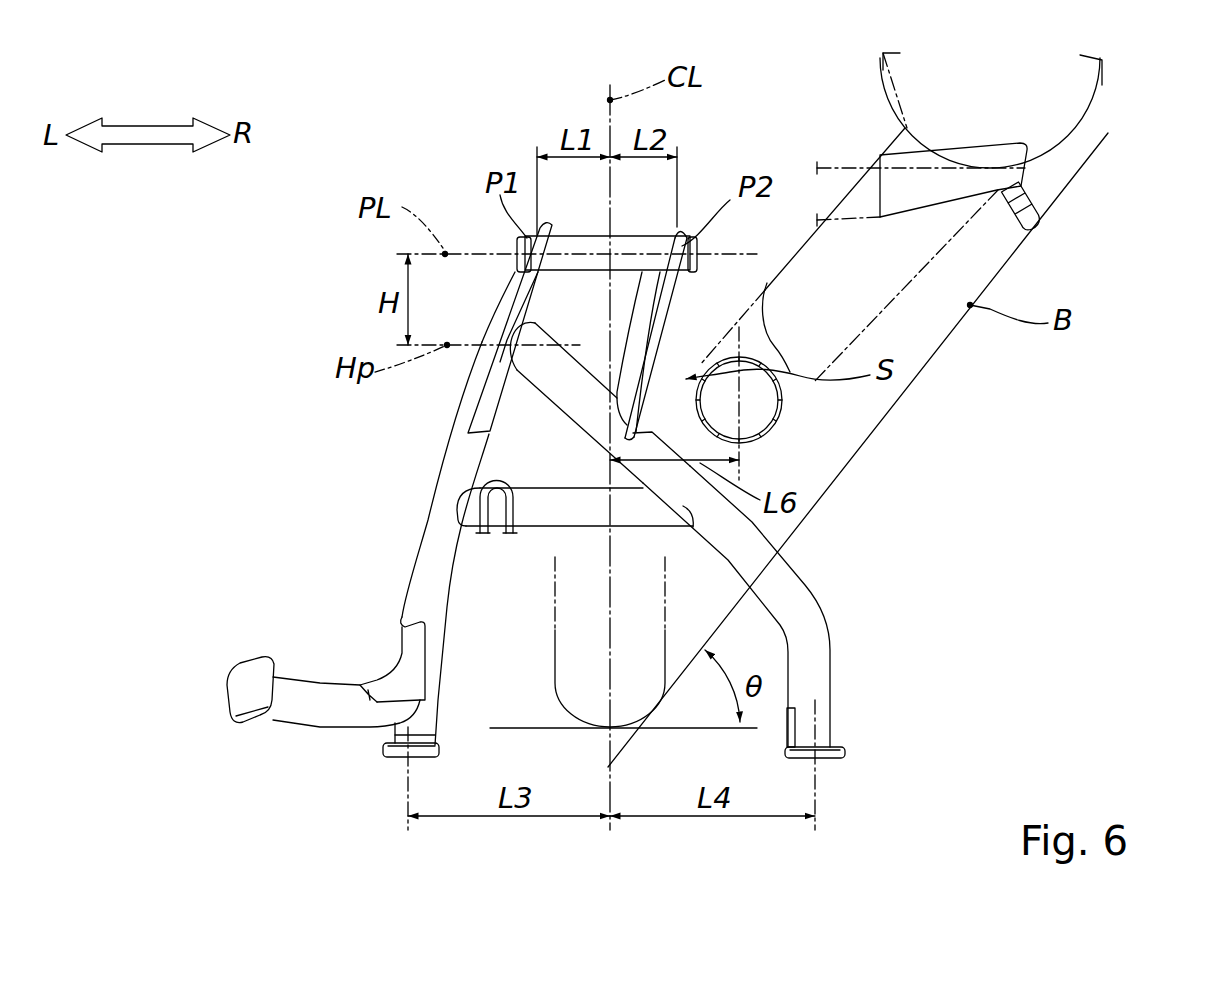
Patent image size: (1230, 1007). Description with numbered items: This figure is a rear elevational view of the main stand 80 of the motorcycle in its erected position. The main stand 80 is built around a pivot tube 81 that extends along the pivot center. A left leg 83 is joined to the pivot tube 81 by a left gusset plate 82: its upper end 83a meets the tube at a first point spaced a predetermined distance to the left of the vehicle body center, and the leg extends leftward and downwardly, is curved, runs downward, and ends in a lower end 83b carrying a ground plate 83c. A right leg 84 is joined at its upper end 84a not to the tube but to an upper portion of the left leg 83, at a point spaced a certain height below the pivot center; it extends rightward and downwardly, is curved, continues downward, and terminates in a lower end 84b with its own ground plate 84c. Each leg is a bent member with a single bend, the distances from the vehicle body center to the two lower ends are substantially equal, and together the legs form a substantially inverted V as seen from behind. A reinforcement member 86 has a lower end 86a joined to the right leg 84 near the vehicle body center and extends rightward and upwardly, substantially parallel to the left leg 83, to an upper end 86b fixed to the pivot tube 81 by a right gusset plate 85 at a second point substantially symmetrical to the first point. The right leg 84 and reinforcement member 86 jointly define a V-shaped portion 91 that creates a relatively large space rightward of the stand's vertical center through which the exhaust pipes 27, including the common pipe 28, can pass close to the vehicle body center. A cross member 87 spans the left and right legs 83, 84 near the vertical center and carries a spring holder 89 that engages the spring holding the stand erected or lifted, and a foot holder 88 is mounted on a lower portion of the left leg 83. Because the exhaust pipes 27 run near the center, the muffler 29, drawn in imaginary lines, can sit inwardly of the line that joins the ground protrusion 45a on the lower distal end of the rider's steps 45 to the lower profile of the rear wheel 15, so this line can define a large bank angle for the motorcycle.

The main stand 80 is at (342, 300).
The pivot tube 81 is at (577, 237).
The left gusset plate 82 is at (476, 408).
The left leg 83 is at (406, 475).
The upper end of left leg 83a is at (513, 280).
The lower end of left leg 83b is at (389, 734).
The ground plate 83c is at (402, 758).
The right leg 84 is at (746, 529).
The upper end of right leg 84a is at (536, 372).
The lower end of right leg 84b is at (830, 727).
The ground plate 84c is at (847, 757).
The right gusset plate 85 is at (655, 305).
The reinforcement member 86 is at (690, 361).
The lower end of reinforcement member 86a is at (620, 415).
The upper end of reinforcement member 86b is at (680, 282).
The cross member 87 is at (537, 527).
The foot holder 88 is at (310, 693).
The spring holder 89 is at (480, 470).
The V-shaped portion 91 is at (664, 428).
The rear wheel 15 is at (553, 640).
The common pipe 28 is at (762, 433).
The exhaust pipes 27 is at (859, 426).
The muffler 29 is at (1103, 65).
The rider's steps 45 is at (998, 143).
The ground protrusion 45a is at (1033, 223).